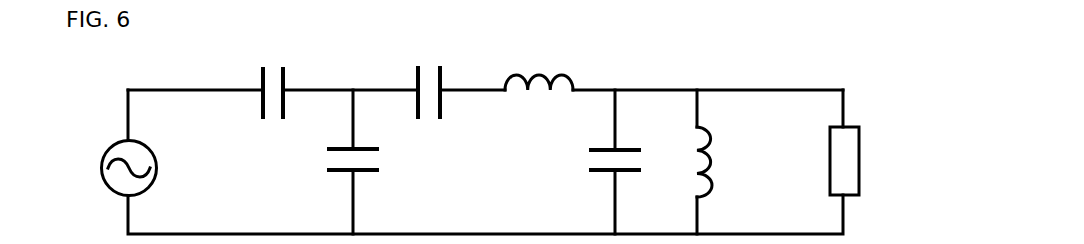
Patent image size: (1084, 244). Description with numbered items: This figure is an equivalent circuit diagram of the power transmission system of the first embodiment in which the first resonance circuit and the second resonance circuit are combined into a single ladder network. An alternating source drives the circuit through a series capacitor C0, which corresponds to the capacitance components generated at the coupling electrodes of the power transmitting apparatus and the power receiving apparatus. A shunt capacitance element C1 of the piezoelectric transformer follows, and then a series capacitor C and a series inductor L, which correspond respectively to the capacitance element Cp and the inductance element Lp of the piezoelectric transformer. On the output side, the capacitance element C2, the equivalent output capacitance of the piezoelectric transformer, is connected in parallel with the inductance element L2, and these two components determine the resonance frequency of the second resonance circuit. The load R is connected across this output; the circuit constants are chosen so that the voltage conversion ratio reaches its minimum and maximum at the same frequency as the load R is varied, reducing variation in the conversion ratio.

The capacitor C0 is at (270, 76).
The capacitor C is at (429, 77).
The inductor L is at (539, 66).
The capacitance element C1 is at (370, 162).
The capacitance element C2 is at (630, 162).
The inductance element L2 is at (719, 162).
The load R is at (857, 161).